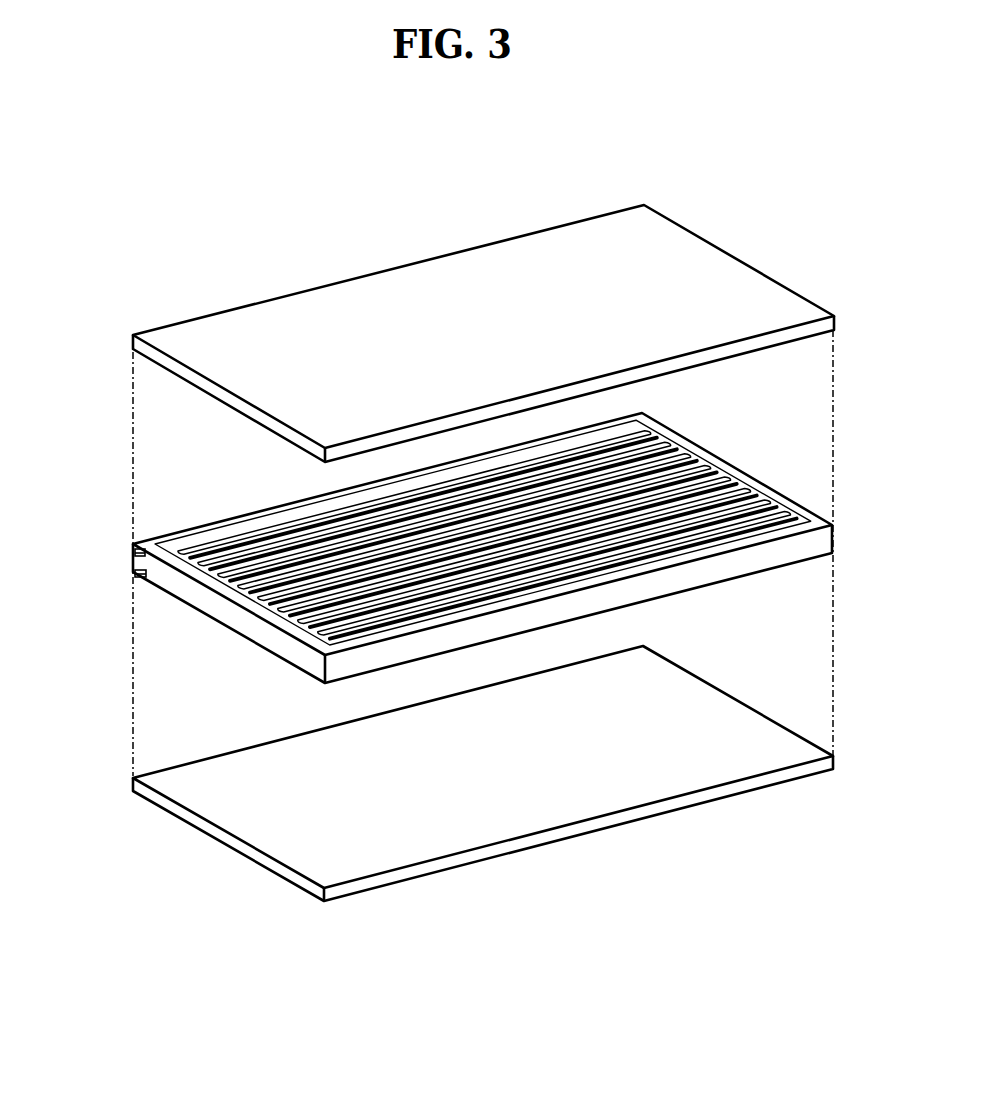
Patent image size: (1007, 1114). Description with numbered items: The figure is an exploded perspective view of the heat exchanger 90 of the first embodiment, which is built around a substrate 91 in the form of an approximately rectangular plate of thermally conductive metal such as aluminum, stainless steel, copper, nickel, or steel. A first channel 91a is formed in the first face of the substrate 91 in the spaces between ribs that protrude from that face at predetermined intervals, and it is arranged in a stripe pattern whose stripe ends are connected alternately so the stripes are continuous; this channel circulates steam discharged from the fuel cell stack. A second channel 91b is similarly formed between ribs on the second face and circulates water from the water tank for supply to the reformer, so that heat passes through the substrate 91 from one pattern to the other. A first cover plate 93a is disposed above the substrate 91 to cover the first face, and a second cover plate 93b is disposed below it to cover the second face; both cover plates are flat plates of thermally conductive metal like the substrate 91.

The heat exchanger 90 is at (461, 156).
The substrate 91 is at (752, 458).
The first channel 91a is at (135, 552).
The second channel 91b is at (136, 574).
The first cover plate 93a is at (745, 243).
The second cover plate 93b is at (733, 699).